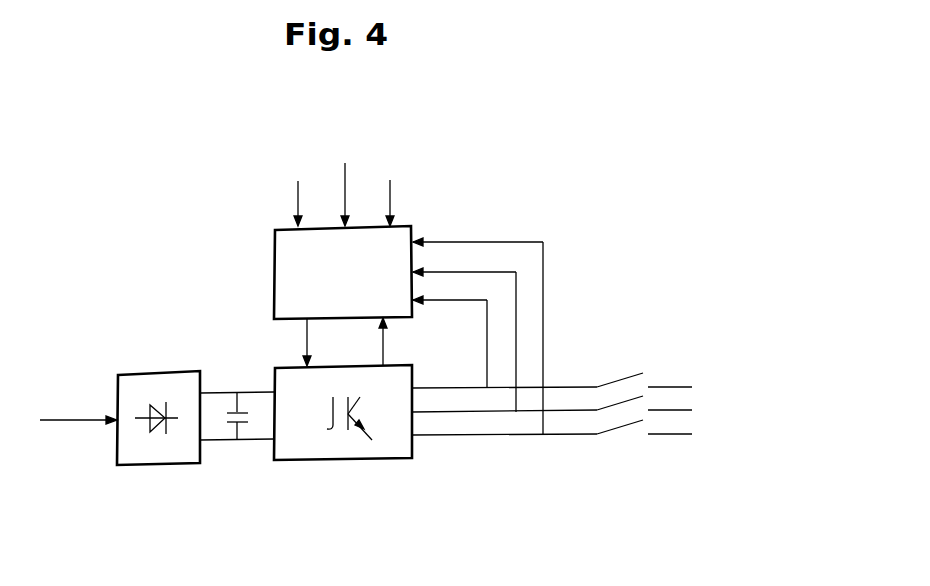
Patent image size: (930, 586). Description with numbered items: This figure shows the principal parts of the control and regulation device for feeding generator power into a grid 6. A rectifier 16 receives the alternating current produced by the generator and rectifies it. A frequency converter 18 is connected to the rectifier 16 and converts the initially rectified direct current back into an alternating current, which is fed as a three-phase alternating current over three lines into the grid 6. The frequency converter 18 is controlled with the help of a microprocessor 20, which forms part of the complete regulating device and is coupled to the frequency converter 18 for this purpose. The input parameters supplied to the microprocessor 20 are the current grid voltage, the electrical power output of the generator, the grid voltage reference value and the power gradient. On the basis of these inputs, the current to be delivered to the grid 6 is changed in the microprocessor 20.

The grid 6 is at (752, 367).
The rectifier 16 is at (145, 464).
The frequency converter 18 is at (312, 461).
The microprocessor 20 is at (273, 253).